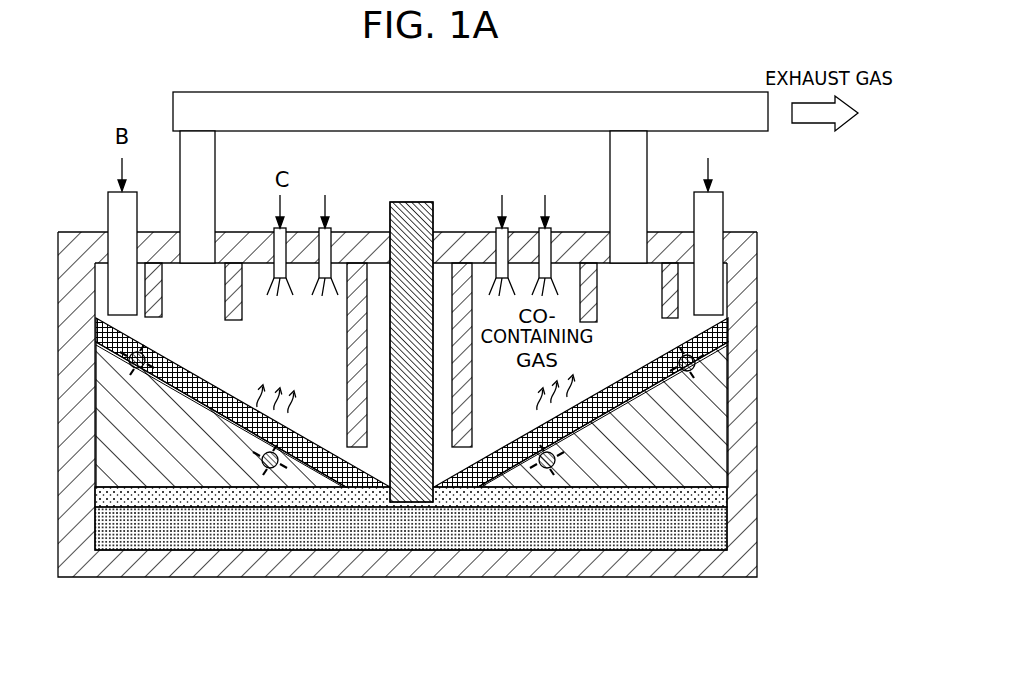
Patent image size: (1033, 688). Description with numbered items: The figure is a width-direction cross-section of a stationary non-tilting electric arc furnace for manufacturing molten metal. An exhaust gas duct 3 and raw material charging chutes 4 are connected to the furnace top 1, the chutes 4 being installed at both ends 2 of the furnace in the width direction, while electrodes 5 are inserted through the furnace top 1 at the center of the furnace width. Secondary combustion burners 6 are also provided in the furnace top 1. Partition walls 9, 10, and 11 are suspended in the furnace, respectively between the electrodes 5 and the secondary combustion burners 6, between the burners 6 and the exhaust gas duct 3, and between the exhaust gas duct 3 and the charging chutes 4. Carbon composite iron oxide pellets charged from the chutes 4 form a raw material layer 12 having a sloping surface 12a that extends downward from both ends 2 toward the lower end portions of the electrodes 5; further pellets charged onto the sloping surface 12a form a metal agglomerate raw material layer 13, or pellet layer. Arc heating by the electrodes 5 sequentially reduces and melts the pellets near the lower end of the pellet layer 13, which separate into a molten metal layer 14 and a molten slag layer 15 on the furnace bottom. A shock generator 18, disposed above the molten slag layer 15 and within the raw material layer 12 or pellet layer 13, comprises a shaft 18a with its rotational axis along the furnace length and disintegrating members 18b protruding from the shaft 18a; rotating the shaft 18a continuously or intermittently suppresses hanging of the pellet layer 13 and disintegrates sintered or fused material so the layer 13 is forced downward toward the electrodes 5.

The furnace top 1 is at (585, 232).
The end of the furnace in the width direction 2 is at (95, 383).
The exhaust gas duct 3 is at (216, 153).
The raw material charging chute 4 is at (108, 196).
The electrode 5 is at (434, 213).
The secondary combustion burner 6 is at (288, 279).
The partition wall 9 is at (347, 356).
The partition wall 10 is at (243, 316).
The partition wall 11 is at (163, 290).
The raw material layer 12 is at (217, 465).
The sloping surface 12a is at (168, 374).
The metal agglomerate raw material layer 13 is at (222, 387).
The molten metal layer 14 is at (392, 516).
The molten slag layer 15 is at (657, 500).
The shock generator 18 is at (412, 504).
The shaft 18a is at (570, 468).
The disintegrating member 18b is at (552, 463).